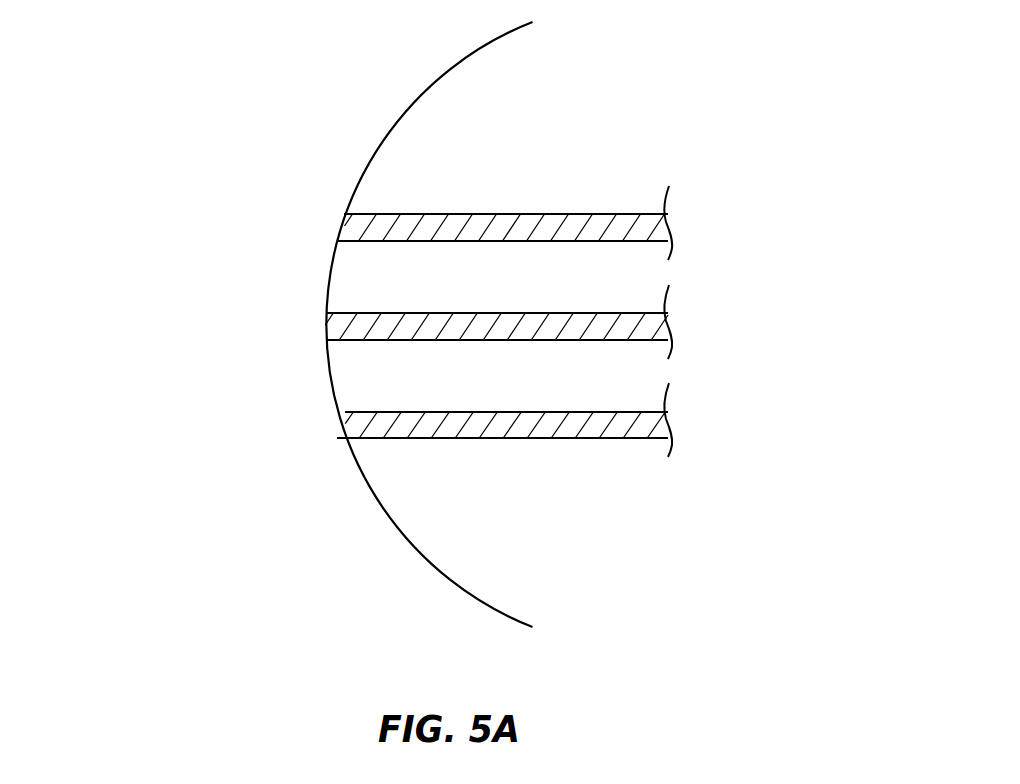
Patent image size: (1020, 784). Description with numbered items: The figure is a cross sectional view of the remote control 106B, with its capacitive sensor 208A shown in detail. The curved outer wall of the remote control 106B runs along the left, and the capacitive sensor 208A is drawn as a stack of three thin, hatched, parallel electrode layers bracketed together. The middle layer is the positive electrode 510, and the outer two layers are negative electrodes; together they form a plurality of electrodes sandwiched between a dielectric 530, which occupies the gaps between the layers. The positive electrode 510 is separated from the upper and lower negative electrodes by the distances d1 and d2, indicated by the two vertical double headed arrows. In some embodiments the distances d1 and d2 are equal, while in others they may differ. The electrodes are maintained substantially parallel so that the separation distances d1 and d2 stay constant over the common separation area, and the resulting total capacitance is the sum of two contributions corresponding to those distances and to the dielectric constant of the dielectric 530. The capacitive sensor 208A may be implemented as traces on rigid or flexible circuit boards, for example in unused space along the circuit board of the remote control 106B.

The remote control 106B is at (352, 143).
The positive electrode 510 is at (672, 328).
The dielectric 530 is at (355, 384).
The capacitive sensor 208A is at (108, 215).
The distance d1 is at (487, 242).
The distance d2 is at (487, 341).